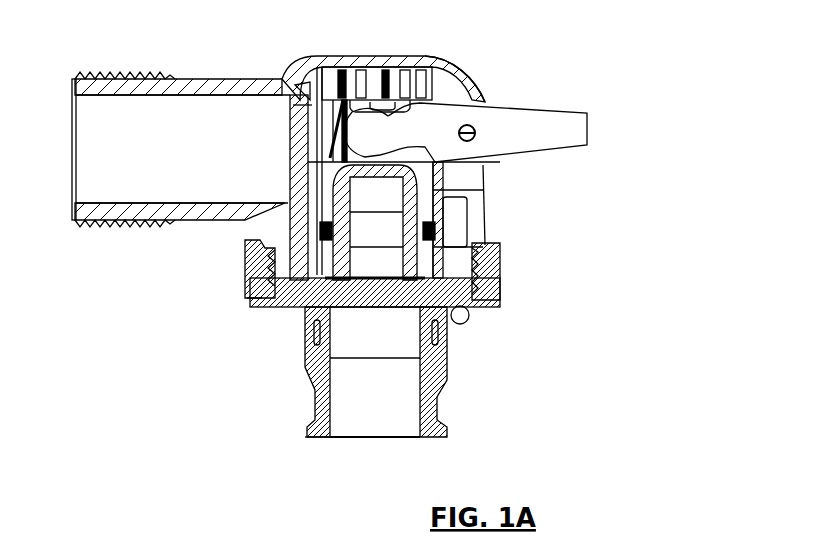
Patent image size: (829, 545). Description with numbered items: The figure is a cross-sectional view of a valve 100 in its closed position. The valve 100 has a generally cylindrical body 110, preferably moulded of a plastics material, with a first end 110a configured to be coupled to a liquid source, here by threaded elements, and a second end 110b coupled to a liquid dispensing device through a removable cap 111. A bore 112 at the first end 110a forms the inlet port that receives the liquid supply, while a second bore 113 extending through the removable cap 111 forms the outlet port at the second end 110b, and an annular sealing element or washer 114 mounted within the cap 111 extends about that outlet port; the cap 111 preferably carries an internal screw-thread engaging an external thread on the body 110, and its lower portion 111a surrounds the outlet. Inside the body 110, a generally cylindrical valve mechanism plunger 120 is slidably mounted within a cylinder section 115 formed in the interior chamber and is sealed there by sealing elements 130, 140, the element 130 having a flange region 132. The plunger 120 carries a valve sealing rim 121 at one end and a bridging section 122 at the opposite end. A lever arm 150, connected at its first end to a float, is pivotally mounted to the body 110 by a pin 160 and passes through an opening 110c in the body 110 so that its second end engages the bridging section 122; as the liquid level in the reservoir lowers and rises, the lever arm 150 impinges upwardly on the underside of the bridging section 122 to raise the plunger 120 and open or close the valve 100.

The valve 100 is at (446, 31).
The body 110 is at (455, 58).
The first end 110a is at (115, 73).
The second end 110b is at (301, 443).
The opening 110c is at (473, 89).
The removable cap 111 is at (503, 293).
The lower pipe portion of nut 111a is at (440, 378).
The bore 112 is at (70, 187).
The second bore 113 is at (383, 424).
The annular sealing element 114 is at (305, 320).
The cylinder section 115 is at (293, 84).
The valve mechanism plunger 120 is at (472, 212).
The valve sealing rim 121 is at (468, 325).
The bridging section 122 is at (366, 66).
The sealing element 130 is at (247, 240).
The collar flange 132 is at (247, 295).
The sealing element 140 is at (500, 244).
The lever arm 150 is at (564, 118).
The pin 160 is at (478, 133).